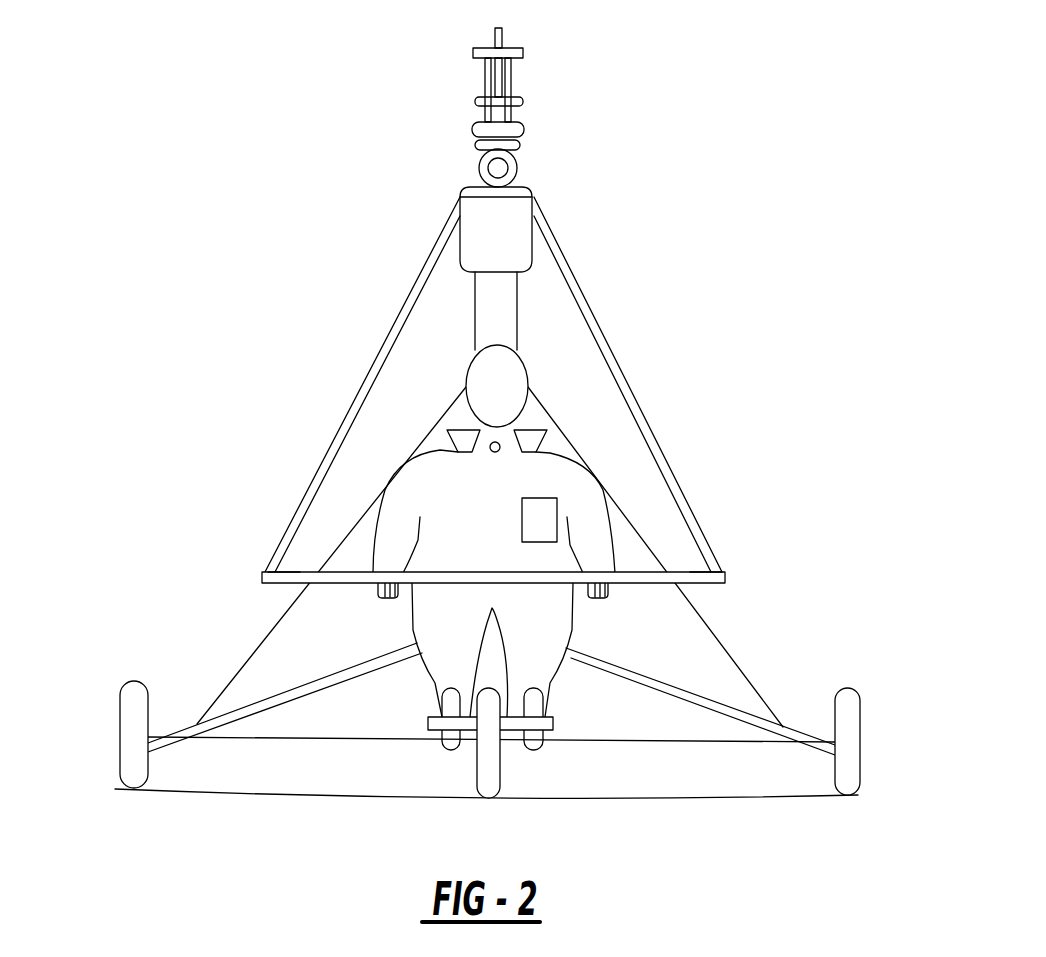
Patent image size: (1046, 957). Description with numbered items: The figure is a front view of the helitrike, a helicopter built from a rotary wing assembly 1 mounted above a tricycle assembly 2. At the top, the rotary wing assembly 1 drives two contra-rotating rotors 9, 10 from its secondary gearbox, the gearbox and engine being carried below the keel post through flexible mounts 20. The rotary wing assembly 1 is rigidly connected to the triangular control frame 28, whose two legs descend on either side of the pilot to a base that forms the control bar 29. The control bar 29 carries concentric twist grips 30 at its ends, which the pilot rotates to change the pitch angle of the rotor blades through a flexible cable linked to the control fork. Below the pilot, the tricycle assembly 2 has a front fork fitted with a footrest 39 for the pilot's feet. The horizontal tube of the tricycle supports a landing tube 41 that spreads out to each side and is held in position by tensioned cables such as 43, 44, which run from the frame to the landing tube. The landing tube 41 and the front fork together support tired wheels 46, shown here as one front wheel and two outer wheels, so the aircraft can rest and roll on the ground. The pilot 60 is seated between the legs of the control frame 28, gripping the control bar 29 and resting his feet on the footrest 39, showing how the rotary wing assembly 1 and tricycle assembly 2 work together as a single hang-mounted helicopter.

The rotary wing assembly 1 is at (528, 230).
The tricycle assembly 2 is at (362, 384).
The contra-rotating rotor 9 is at (475, 100).
The contra-rotating rotor 10 is at (520, 52).
The flexible mounts 20 is at (500, 90).
The triangular control frame 28 is at (644, 430).
The control bar 29 is at (323, 575).
The concentric twist grips 30 is at (357, 572).
The footrest 39 is at (427, 727).
The landing tube 41 is at (257, 703).
The tensioned cable 43 is at (647, 740).
The tensioned cable 44 is at (262, 643).
The tired wheels 46 is at (120, 731).
The pilot 60 is at (232, 345).